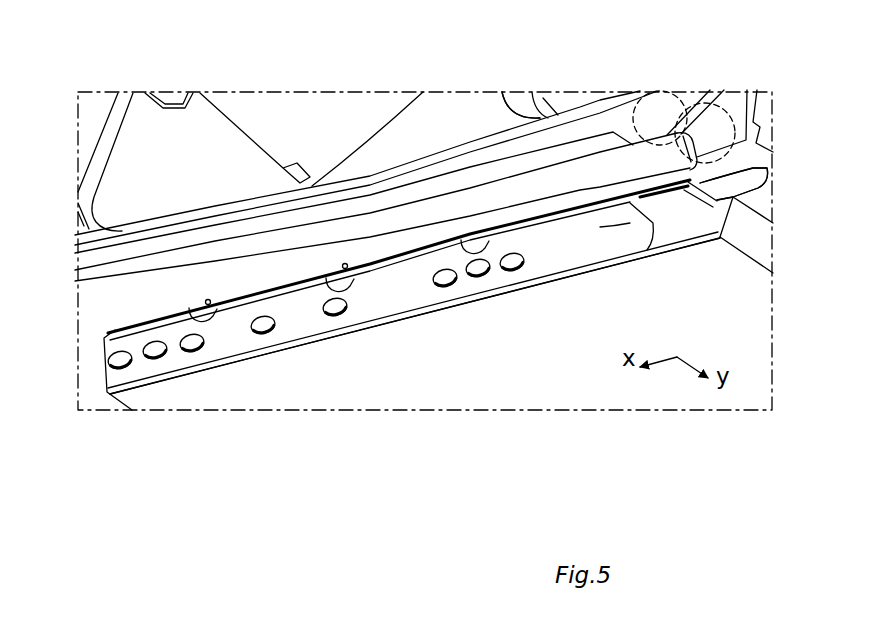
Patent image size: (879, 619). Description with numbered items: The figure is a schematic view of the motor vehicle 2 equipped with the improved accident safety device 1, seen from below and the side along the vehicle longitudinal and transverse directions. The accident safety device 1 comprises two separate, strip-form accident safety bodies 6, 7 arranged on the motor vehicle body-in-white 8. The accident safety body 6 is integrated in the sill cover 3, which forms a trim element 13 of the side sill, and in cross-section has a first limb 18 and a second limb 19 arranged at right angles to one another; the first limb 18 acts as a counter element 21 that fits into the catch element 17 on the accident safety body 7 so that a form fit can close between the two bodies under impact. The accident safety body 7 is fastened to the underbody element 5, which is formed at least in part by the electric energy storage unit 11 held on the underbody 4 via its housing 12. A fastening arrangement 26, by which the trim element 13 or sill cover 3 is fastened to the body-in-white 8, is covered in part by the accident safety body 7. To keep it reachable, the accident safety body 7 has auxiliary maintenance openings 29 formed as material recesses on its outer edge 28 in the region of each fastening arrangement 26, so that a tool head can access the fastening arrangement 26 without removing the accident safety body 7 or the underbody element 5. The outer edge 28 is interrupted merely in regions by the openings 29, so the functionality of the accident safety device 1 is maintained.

The accident safety device 1 is at (95, 348).
The motor vehicle 2 is at (240, 128).
The sill cover 3 is at (549, 125).
The underbody 4 is at (413, 418).
The underbody element 5 is at (289, 410).
The accident safety body 6 is at (404, 220).
The accident safety body 7 is at (413, 311).
The motor vehicle body-in-white 8 is at (453, 127).
The electric energy storage unit 11 is at (289, 410).
The housing 12 is at (565, 385).
The trim element 13 is at (549, 125).
The catch element 17 is at (300, 300).
The first limb 18 is at (738, 98).
The second limb 19 is at (652, 101).
The counter element 21 is at (738, 98).
The fastening arrangement 26 is at (208, 299).
The outer edge 28 is at (233, 312).
The auxiliary maintenance opening 29 is at (197, 327).